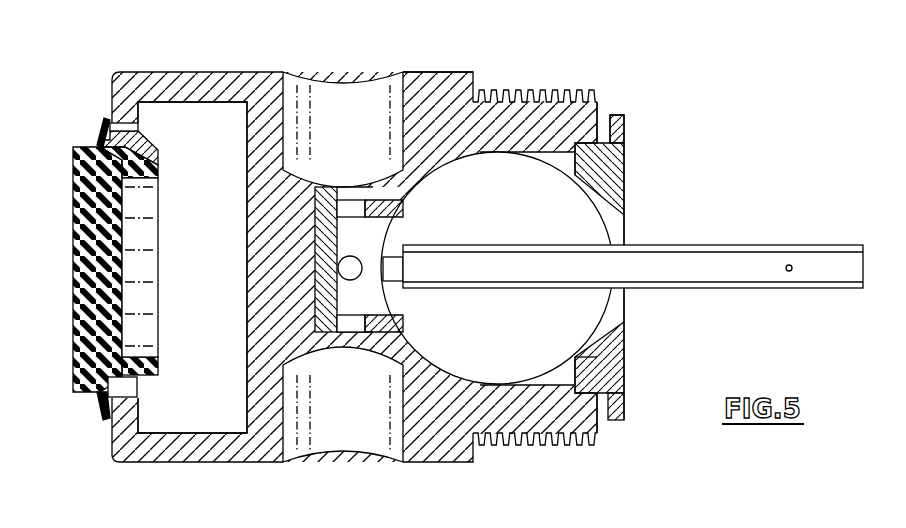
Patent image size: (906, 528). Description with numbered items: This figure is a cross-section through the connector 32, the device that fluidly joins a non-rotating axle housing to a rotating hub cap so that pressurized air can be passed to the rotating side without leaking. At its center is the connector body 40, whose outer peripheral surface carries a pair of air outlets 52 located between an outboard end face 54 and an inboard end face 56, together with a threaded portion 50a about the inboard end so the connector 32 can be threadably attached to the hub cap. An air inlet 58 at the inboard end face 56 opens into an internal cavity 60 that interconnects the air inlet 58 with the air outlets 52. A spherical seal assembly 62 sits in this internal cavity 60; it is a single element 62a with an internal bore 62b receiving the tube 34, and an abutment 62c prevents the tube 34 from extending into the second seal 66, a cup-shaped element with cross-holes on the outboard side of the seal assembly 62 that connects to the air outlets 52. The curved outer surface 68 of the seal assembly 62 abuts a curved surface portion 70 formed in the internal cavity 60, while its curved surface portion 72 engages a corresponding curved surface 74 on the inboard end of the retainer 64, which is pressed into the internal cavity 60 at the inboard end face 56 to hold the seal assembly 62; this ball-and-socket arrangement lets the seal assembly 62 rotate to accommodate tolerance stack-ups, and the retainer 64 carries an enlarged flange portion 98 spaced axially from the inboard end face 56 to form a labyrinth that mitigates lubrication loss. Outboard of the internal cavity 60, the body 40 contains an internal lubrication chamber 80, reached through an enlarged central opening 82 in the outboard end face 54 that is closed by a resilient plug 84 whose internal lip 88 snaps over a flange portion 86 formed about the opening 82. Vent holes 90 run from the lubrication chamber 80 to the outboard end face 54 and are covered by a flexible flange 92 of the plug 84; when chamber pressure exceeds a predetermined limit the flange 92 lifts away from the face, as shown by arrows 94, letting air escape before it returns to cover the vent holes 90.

The connector 32 is at (780, 98).
The tube 34 is at (765, 247).
The connector body 40 is at (552, 115).
The threaded portion 50a is at (537, 90).
The air outlets 52 is at (373, 97).
The outboard end face 54 is at (107, 430).
The inboard end face 56 is at (600, 423).
The air inlet 58 is at (585, 125).
The internal cavity 60 is at (562, 378).
The seal assembly 62 is at (571, 223).
The single element 62a is at (527, 331).
The internal bore 62b is at (592, 246).
The abutment 62c is at (397, 290).
The retainer 64 is at (606, 365).
The second seal 66 is at (314, 278).
The curved outer surface 68 is at (433, 167).
The curved surface portion 70 is at (452, 157).
The curved surface portion 72 is at (597, 357).
The curved surface 74 is at (624, 155).
The internal lubrication chamber 80 is at (193, 397).
The opening 82 is at (130, 353).
The plug 84 is at (97, 288).
The flange portion 86 is at (134, 142).
The internal lip 88 is at (157, 156).
The vent holes 90 is at (125, 125).
The flexible flange 92 is at (104, 122).
The arrows 94 is at (62, 118).
The enlarged flange portion 98 is at (622, 405).